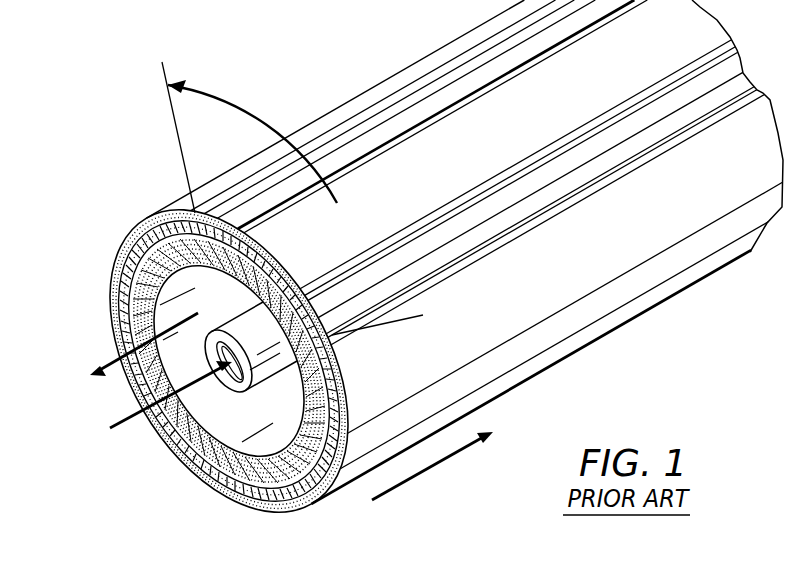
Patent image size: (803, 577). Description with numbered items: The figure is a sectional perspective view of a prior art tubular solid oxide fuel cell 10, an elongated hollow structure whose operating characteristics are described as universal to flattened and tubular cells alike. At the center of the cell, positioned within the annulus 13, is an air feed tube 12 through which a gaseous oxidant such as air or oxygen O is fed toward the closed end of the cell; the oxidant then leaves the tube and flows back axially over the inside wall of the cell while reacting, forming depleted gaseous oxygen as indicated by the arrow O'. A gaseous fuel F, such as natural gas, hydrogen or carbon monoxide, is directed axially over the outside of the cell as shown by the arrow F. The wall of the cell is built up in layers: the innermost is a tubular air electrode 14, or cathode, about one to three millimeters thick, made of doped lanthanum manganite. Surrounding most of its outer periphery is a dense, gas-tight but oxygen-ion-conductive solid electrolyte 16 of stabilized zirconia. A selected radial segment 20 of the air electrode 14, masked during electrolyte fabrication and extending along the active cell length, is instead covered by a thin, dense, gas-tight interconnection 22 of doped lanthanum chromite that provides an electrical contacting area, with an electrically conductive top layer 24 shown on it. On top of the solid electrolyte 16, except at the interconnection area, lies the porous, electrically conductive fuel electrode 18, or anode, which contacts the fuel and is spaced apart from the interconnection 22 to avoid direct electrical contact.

The tubular solid oxide fuel cell 10 is at (448, 365).
The air feed tube 12 is at (273, 368).
The annulus 13 is at (192, 448).
The air electrode 14 is at (131, 237).
The solid electrolyte 16 is at (128, 268).
The fuel electrode 18 is at (113, 305).
The radial segment 20 is at (412, 320).
The interconnection 22 is at (270, 268).
The electrically conductive top layer 24 is at (258, 245).
The gaseous oxidant O is at (167, 414).
The depleted gaseous oxygen O' is at (137, 363).
The gaseous fuel F is at (445, 465).